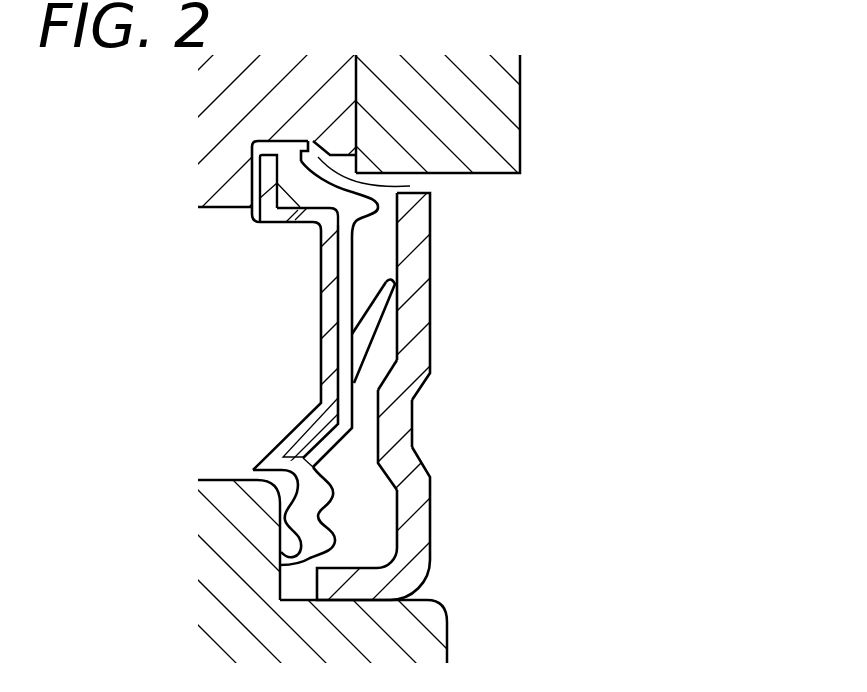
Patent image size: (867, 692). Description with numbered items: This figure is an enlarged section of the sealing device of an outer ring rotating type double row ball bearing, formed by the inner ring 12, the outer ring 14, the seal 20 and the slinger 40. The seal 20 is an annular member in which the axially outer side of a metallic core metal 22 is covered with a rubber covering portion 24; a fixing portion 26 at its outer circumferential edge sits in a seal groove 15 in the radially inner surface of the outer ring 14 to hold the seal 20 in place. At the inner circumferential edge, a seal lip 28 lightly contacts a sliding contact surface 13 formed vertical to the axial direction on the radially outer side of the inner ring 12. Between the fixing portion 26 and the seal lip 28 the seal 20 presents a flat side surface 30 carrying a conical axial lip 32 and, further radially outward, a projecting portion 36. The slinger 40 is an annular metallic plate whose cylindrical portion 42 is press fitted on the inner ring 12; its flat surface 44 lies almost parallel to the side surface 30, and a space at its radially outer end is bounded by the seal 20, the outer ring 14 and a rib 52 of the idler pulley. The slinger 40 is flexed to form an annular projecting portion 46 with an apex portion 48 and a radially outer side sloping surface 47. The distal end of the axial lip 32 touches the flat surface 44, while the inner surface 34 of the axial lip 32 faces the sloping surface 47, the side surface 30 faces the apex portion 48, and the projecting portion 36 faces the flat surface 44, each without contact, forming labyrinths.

The inner ring 12 is at (335, 651).
The sliding contact surface 13 is at (283, 594).
The outer ring 14 is at (334, 101).
The seal groove 15 is at (410, 186).
The seal 20 is at (306, 248).
The core metal 22 is at (327, 268).
The rubber covering portion 24 is at (322, 211).
The fixing portion 26 is at (290, 147).
The seal lip 28 is at (297, 550).
The side surface 30 is at (351, 305).
The axial lip 32 is at (372, 318).
The inner surface 34 is at (383, 328).
The projecting portion 36 is at (378, 198).
The slinger 40 is at (445, 272).
The cylindrical portion 42 is at (355, 583).
The flat surface 44 is at (397, 245).
The projecting portion 46 is at (398, 422).
The radially outer side sloping surface 47 is at (392, 369).
The apex portion 48 is at (378, 444).
The rib 52 is at (422, 138).